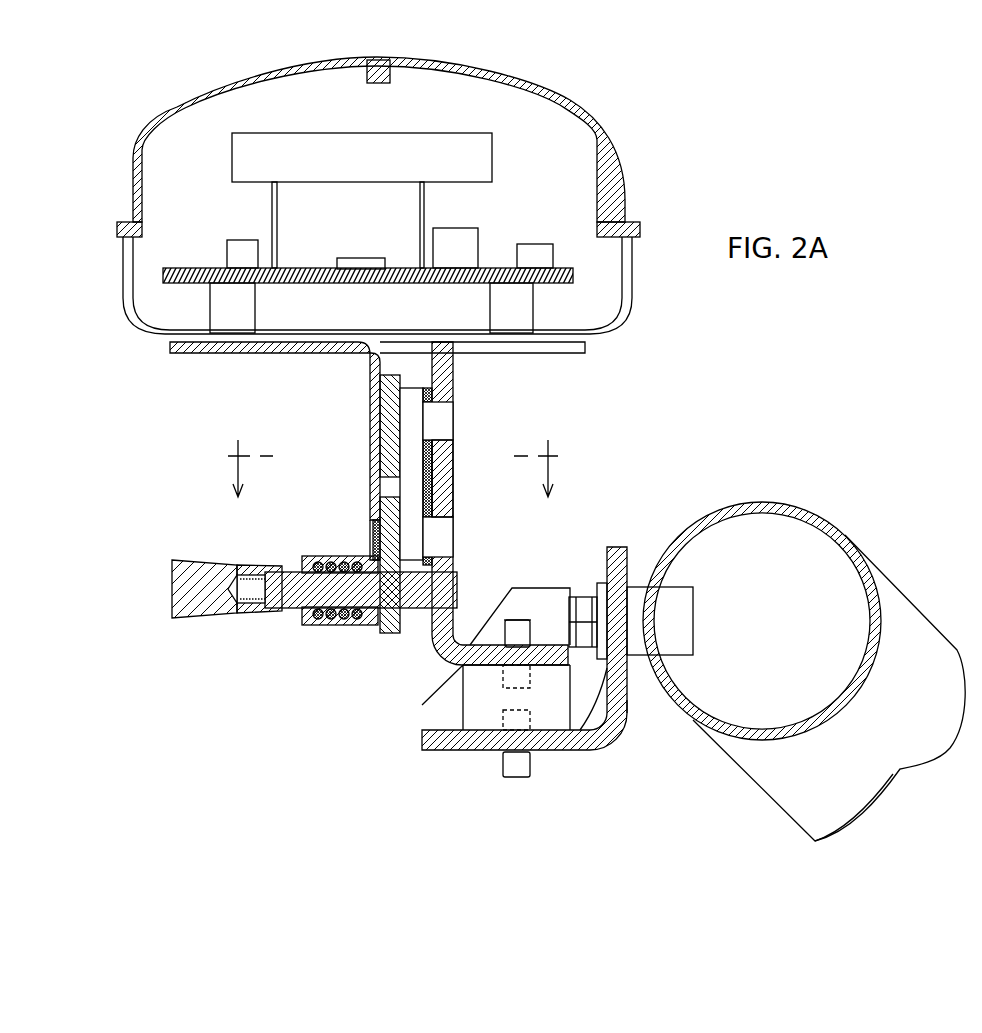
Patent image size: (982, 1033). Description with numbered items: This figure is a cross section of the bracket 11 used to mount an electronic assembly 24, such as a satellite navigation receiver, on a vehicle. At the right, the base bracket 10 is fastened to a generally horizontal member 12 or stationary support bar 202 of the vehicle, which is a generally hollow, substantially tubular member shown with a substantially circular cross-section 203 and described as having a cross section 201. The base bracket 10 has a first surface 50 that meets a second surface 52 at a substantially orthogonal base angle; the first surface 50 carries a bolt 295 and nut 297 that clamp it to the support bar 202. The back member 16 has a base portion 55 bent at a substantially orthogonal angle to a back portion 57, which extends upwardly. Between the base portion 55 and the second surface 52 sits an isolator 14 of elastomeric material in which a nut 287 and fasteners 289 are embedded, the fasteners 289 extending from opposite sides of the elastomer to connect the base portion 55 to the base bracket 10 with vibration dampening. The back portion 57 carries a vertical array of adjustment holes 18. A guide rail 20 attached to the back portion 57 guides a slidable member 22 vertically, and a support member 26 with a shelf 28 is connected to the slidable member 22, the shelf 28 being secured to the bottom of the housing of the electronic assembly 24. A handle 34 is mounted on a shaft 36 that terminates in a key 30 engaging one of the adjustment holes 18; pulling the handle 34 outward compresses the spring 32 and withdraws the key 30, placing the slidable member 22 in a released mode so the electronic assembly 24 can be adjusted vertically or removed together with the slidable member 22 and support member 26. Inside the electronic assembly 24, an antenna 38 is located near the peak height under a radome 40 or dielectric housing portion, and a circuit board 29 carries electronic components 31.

The base bracket 10 is at (613, 737).
The bracket 11 is at (768, 379).
The generally horizontal member 12 is at (738, 503).
The isolator 14 is at (443, 748).
The back member 16 is at (453, 352).
The first holes 18 is at (442, 421).
The guide rail 20 is at (372, 537).
The slidable member 22 is at (390, 440).
The electronic assembly 24 is at (180, 107).
The support member 26 is at (370, 440).
The shelf 28 is at (282, 350).
The circuit board 29 is at (294, 268).
The key 30 is at (428, 590).
The electronic components 31 is at (243, 240).
The spring 32 is at (348, 557).
The handle 34 is at (196, 608).
The shaft 36 is at (325, 590).
The antenna 38 is at (367, 166).
The radome 40 is at (578, 98).
The first surface 50 is at (607, 565).
The second surface 52 is at (443, 728).
The base portion 55 is at (488, 640).
The back portion 57 is at (447, 463).
The cross section 201 is at (803, 564).
The stationary support bar 202 is at (817, 511).
The substantially circular cross-section 203 is at (845, 534).
The nut 287 is at (530, 673).
The fasteners 289 is at (522, 633).
The bolt 295 is at (583, 634).
The nut 297 is at (670, 620).